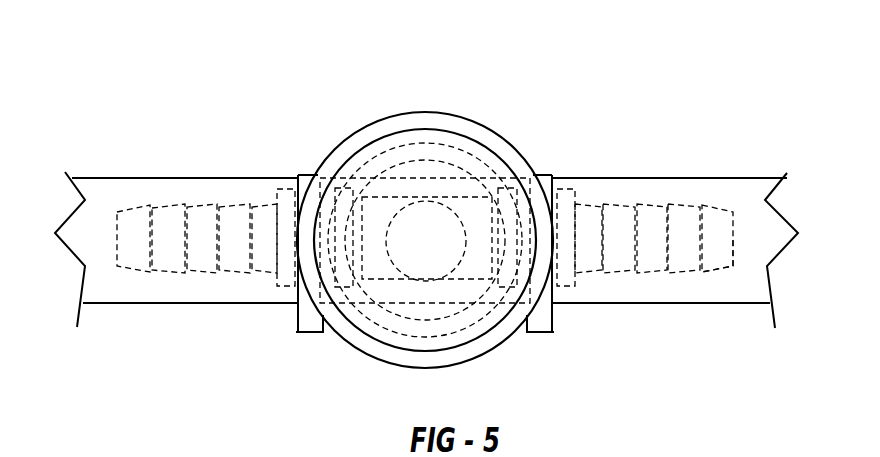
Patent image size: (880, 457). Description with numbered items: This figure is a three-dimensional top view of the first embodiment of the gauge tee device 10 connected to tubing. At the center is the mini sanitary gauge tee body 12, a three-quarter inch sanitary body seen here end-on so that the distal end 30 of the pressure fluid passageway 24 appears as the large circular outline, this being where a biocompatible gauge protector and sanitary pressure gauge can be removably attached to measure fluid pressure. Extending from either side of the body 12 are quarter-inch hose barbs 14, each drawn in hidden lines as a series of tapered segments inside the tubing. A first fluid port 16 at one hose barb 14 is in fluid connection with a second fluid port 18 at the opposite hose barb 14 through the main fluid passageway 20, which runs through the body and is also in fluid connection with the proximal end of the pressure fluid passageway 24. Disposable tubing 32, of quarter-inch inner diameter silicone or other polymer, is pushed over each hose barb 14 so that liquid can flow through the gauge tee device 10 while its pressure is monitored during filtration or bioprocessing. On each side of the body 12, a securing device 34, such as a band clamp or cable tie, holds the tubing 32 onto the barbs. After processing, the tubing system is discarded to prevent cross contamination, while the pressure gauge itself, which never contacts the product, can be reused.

The gauge tee device 10 is at (458, 115).
The mini sanitary gauge tee body 12 is at (355, 132).
The hose barbs 14 is at (200, 243).
The first fluid port 16 is at (118, 245).
The second fluid port 18 is at (737, 226).
The main fluid passageway 20 is at (738, 246).
The pressure fluid passageway 24 is at (440, 213).
The distal end of the pressure fluid passageway 30 is at (527, 157).
The disposable tubing 32 is at (678, 191).
The securing device 34 is at (300, 327).